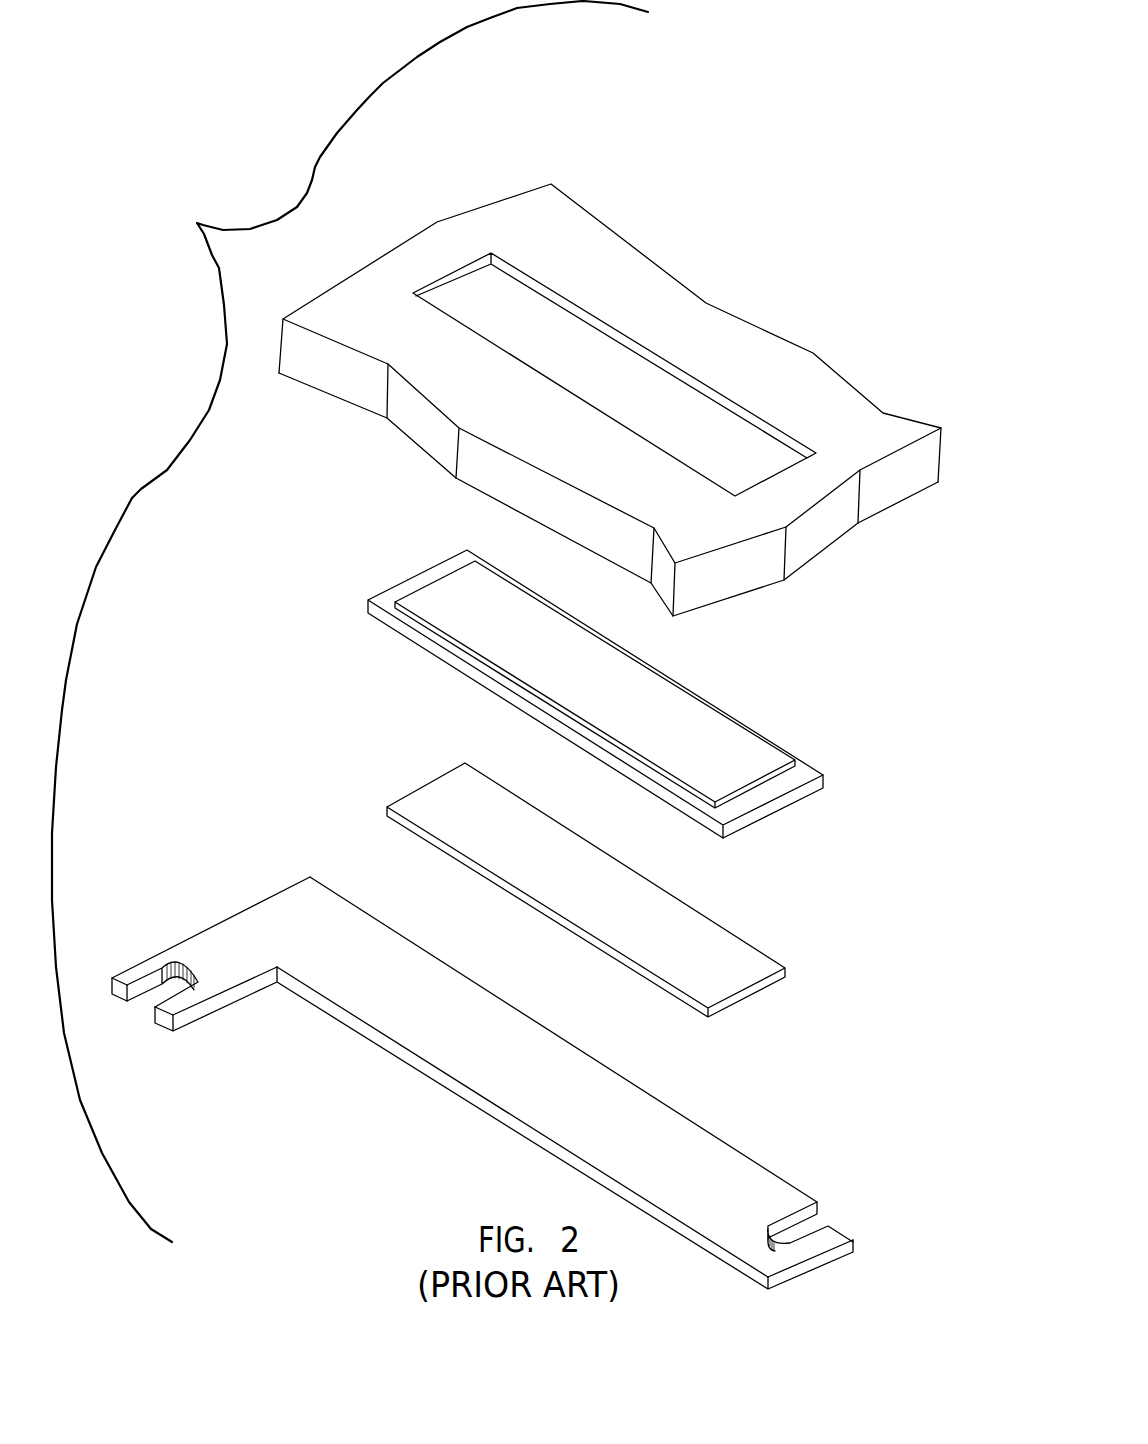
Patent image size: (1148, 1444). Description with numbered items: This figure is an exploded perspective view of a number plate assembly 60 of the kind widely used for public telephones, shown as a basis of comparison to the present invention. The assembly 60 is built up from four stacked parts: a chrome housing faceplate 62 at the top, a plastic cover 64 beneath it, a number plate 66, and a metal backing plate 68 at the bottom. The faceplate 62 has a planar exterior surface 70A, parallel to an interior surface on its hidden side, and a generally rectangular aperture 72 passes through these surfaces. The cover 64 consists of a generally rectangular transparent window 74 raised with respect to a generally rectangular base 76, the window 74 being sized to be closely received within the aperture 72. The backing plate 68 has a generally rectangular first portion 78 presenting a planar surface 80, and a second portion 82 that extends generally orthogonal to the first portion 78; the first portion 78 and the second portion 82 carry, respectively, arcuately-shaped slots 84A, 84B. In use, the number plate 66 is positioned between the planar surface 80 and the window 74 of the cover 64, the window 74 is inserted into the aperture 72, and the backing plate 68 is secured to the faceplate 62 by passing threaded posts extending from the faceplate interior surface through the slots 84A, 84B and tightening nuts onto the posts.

The number plate assembly 60 is at (350, 621).
The chrome housing faceplate 62 is at (610, 331).
The plastic cover 64 is at (604, 648).
The number plate 66 is at (405, 790).
The metal backing plate 68 is at (507, 1050).
The planar exterior surface 70A is at (564, 246).
The rectangular aperture 72 is at (586, 357).
The transparent window 74 is at (717, 750).
The base 76 is at (815, 770).
The first portion 78 is at (627, 1080).
The planar surface 80 is at (470, 1028).
The second portion 82 is at (196, 935).
The arcuately-shaped slot 84A is at (816, 1222).
The arcuately-shaped slot 84B is at (157, 998).